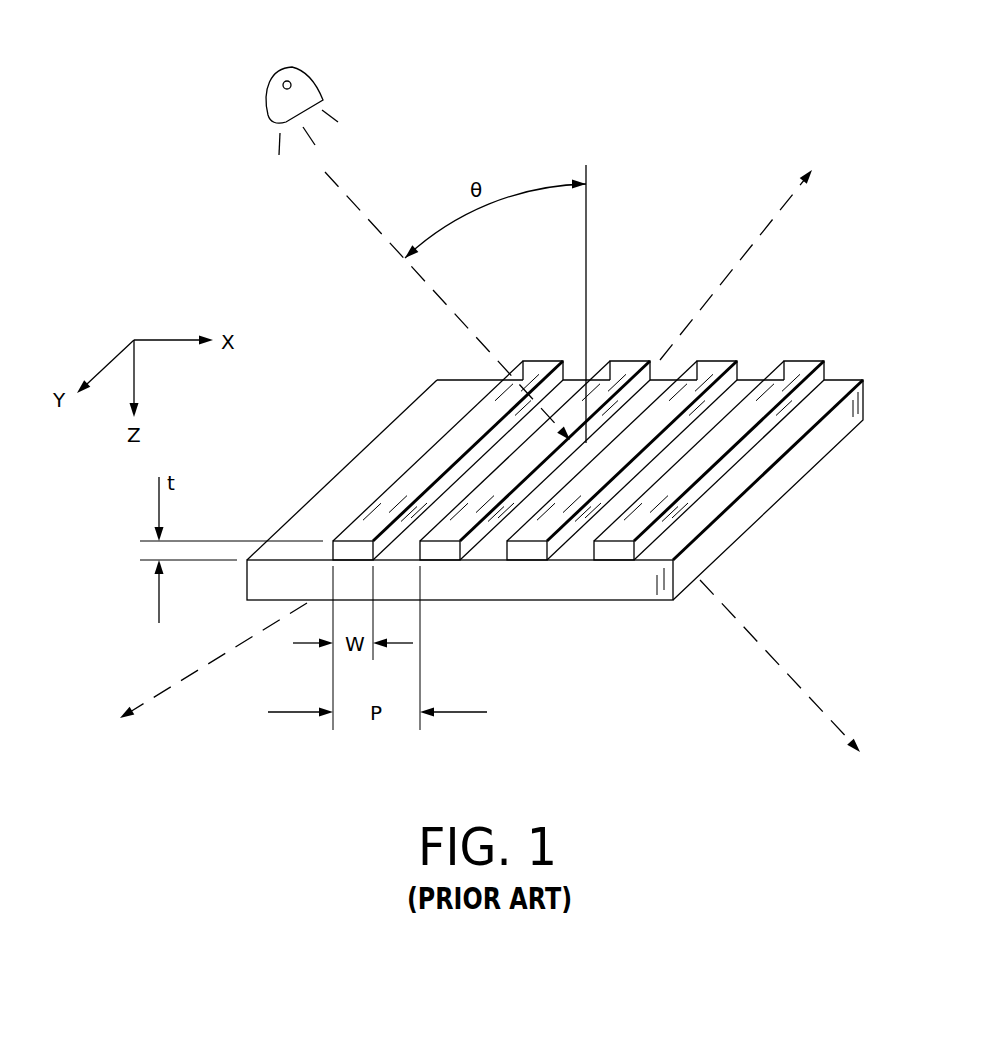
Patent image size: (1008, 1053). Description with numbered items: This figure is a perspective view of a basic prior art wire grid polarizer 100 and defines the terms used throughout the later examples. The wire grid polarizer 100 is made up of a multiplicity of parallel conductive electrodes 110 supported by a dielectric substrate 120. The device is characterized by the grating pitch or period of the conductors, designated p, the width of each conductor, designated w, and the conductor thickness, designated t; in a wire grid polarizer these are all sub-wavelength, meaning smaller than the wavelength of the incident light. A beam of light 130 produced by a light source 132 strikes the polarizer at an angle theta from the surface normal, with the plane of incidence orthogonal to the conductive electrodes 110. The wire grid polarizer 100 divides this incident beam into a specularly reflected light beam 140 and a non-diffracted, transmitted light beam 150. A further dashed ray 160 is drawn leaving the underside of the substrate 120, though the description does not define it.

The wire grid polarizer 100 is at (578, 453).
The parallel conductive electrodes 110 is at (800, 366).
The dielectric substrate 120 is at (763, 505).
The beam of light 130 is at (362, 216).
The light source 132 is at (293, 68).
The specularly reflected light beam 140 is at (773, 217).
The transmitted light beam 150 is at (757, 638).
The diffracted light beam 160 is at (183, 678).